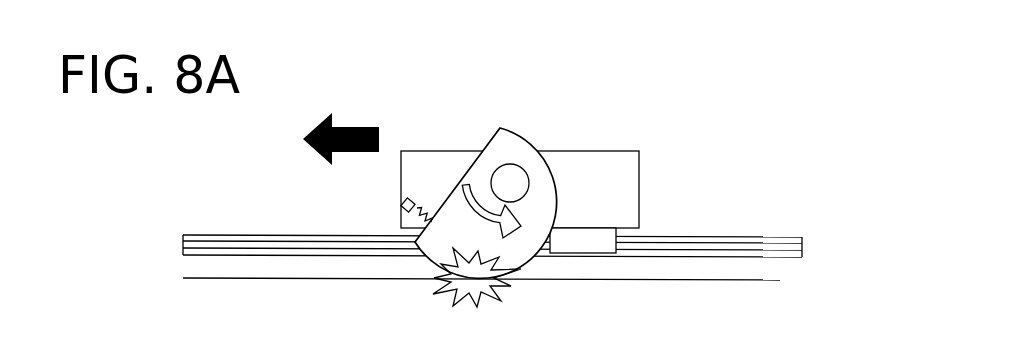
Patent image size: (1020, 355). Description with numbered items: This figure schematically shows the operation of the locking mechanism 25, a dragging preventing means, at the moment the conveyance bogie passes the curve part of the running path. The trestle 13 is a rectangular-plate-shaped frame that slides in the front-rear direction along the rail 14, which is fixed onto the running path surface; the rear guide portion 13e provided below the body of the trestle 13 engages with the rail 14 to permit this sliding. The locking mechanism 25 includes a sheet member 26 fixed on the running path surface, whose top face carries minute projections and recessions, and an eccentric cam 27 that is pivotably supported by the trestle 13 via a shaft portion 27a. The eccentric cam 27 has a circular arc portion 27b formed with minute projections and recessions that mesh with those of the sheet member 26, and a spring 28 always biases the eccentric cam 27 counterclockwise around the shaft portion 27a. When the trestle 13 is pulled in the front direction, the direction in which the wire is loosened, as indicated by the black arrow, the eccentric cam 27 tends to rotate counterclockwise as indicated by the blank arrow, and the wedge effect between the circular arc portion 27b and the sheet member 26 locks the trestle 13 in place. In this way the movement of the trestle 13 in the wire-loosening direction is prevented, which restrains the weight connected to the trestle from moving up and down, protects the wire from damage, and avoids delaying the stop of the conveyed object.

The trestle 13 is at (563, 192).
The rear guide portion 13e is at (602, 238).
The rail 14 is at (773, 240).
The locking mechanism 25 is at (563, 143).
The sheet member 26 is at (698, 282).
The eccentric cam 27 is at (525, 170).
The shaft portion 27a is at (507, 165).
The circular arc portion 27b is at (557, 195).
The spring 28 is at (423, 198).